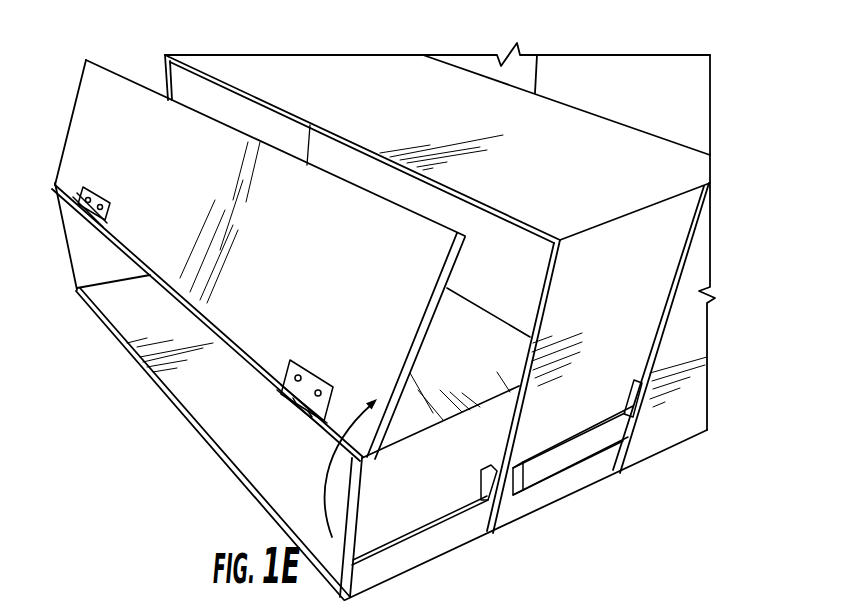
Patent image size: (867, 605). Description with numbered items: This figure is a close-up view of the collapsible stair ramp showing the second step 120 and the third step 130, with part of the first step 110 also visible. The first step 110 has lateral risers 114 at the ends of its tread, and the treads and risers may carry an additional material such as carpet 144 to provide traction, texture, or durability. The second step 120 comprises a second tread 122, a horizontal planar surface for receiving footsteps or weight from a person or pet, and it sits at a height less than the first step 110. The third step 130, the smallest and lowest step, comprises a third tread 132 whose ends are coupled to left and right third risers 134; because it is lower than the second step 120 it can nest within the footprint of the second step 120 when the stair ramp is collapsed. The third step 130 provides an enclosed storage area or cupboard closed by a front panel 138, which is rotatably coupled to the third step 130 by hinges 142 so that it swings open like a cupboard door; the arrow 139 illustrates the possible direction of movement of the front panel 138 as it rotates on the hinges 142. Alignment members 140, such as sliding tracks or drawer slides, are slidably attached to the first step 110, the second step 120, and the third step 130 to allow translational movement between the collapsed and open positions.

The first step 110 is at (626, 84).
The lateral risers 114 is at (692, 343).
The second step 120 is at (279, 76).
The second tread 122 is at (572, 170).
The third step 130 is at (255, 270).
The third tread 132 is at (480, 370).
The third risers 134 is at (464, 495).
The front panel 138 is at (344, 260).
The arrow 139 is at (323, 481).
The alignment members 140 is at (633, 396).
The hinges 142 is at (103, 193).
The carpet 144 is at (644, 299).